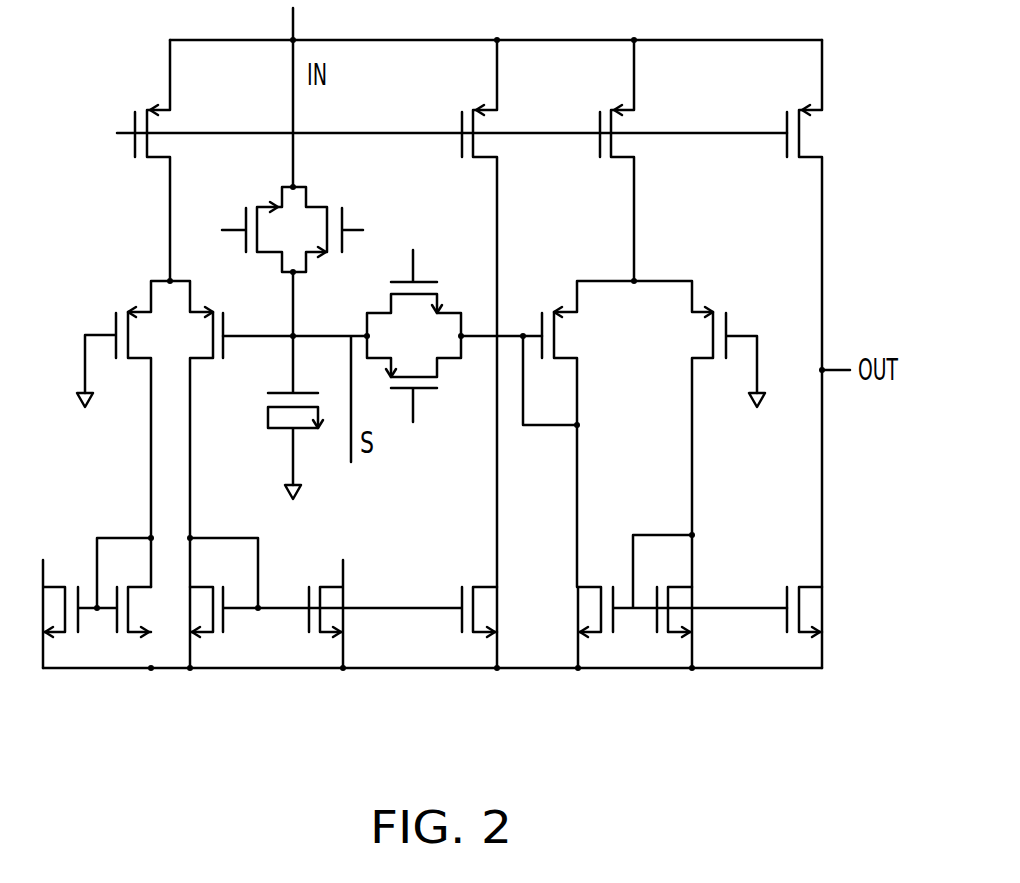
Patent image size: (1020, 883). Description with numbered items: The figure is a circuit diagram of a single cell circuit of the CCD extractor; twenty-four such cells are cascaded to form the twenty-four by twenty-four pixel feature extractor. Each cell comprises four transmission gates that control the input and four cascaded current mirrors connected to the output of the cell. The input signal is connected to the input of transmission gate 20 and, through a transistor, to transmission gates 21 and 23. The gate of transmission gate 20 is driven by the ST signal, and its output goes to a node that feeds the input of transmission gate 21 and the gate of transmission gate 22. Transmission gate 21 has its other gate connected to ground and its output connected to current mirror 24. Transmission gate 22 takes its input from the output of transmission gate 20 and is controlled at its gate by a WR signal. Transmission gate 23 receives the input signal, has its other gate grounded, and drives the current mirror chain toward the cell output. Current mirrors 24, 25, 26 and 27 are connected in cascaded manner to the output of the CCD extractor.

The transmission gate 20 is at (304, 219).
The transmission gate 21 is at (167, 320).
The transmission gate 22 is at (418, 318).
The transmission gate 23 is at (617, 340).
The current mirror 24 is at (98, 652).
The current mirror 25 is at (263, 645).
The current mirror 26 is at (537, 626).
The current mirror 27 is at (747, 672).